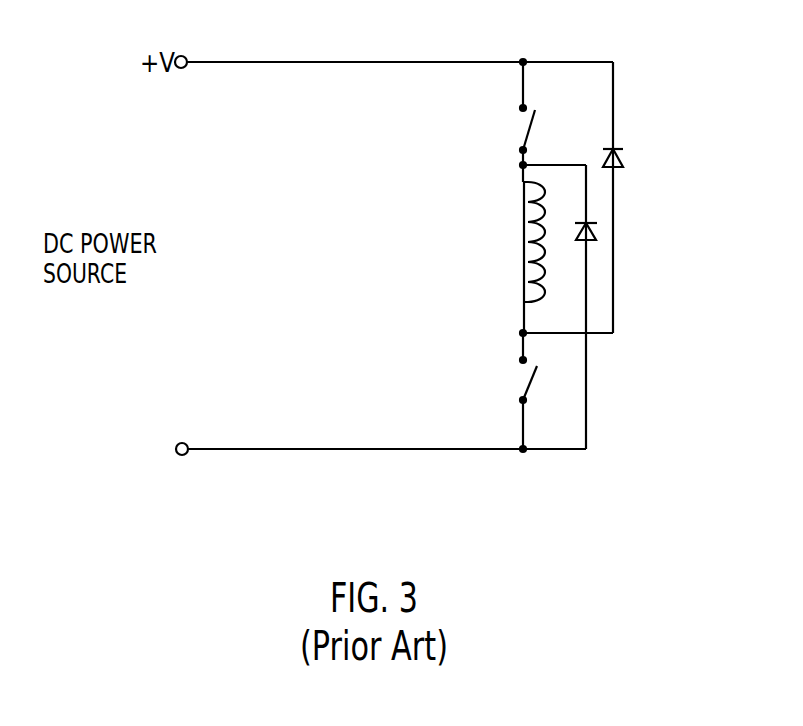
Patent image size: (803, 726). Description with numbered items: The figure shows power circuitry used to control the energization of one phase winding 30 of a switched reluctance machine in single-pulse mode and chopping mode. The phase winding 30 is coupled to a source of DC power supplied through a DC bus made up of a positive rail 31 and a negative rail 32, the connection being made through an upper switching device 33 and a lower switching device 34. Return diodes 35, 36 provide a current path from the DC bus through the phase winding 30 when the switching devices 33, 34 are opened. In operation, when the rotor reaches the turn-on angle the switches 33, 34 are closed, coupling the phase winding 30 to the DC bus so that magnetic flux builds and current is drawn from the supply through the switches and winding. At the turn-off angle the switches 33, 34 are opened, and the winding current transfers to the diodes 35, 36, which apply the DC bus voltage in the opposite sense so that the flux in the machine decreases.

The phase winding 30 is at (510, 232).
The positive rail 31 is at (345, 55).
The negative rail 32 is at (348, 458).
The upper switching device 33 is at (517, 133).
The lower switching device 34 is at (518, 383).
The return diode 35 is at (628, 160).
The return diode 36 is at (600, 232).